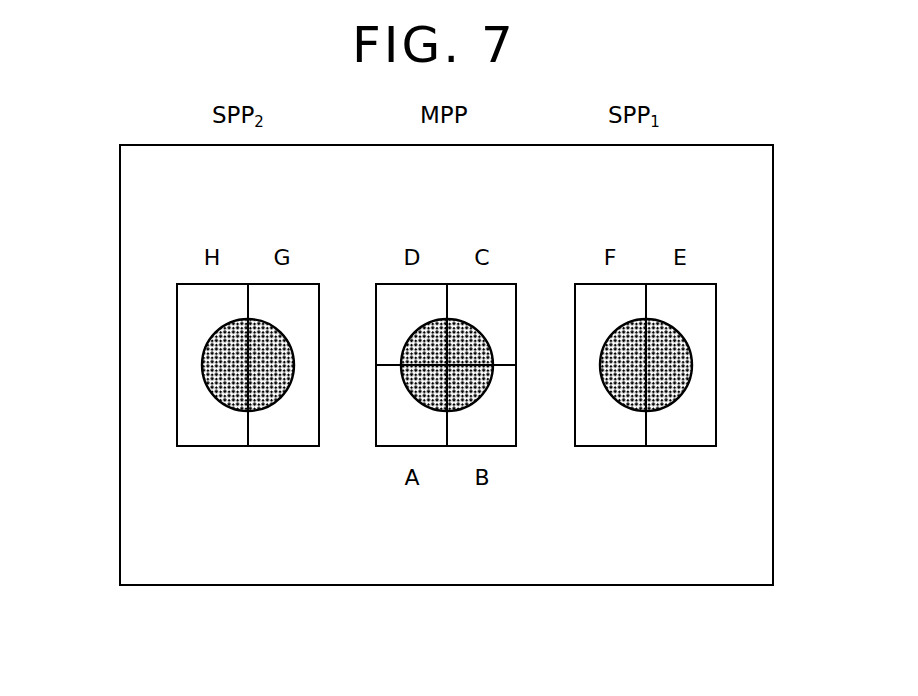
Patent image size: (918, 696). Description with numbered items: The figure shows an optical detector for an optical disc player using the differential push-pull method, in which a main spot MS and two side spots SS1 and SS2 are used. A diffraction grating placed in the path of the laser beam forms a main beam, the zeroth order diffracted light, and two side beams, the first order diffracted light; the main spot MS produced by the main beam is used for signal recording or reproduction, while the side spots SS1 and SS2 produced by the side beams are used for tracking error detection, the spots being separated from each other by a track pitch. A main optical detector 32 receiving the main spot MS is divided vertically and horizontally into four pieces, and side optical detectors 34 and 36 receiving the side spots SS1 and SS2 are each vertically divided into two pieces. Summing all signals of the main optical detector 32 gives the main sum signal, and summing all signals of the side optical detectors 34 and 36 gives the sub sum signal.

The main optical detector 32 is at (397, 429).
The side optical detector 34 is at (213, 429).
The side optical detector 36 is at (612, 429).
The main spot MS is at (475, 383).
The side spot SS1 is at (207, 363).
The side spot SS2 is at (675, 363).